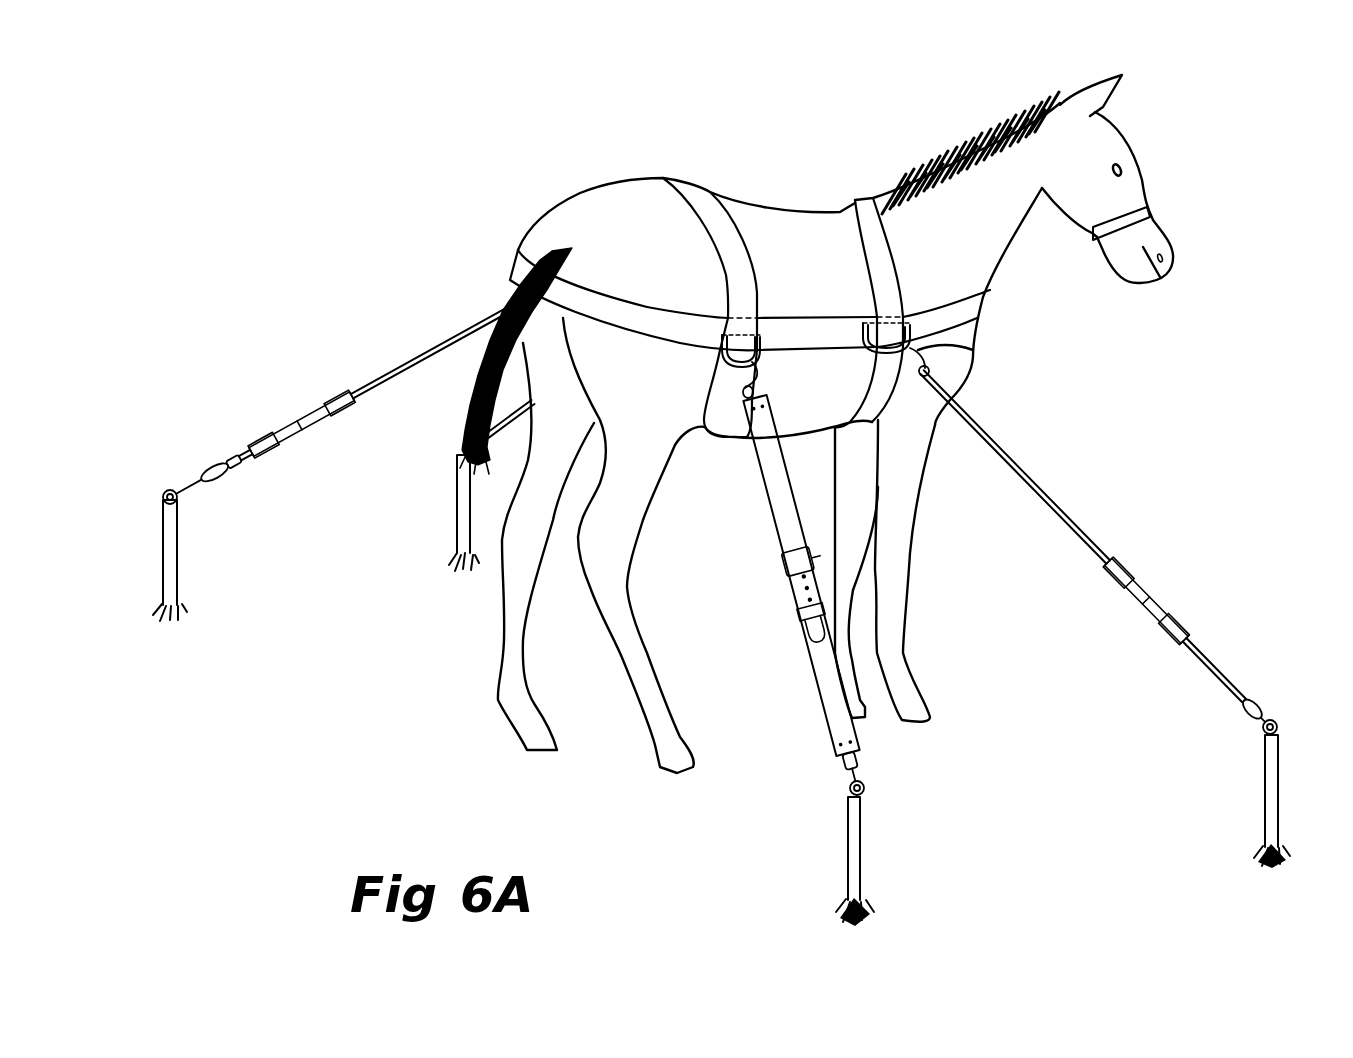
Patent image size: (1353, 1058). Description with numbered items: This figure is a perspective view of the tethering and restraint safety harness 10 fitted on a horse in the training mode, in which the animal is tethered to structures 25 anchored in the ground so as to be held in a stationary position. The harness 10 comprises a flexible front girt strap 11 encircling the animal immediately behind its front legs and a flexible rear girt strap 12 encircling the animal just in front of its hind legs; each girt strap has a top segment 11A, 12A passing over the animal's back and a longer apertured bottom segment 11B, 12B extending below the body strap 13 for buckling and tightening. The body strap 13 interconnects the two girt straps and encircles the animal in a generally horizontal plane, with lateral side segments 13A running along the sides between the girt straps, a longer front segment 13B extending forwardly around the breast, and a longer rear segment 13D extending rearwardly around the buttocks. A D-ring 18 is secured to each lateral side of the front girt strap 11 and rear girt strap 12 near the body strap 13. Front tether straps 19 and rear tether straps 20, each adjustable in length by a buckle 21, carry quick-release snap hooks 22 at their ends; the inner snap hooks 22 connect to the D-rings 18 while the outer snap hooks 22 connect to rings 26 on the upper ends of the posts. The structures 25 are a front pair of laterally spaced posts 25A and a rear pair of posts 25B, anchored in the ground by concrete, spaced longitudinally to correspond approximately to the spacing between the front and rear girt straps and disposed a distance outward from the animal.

The tethering and restraint safety harness 10 is at (1068, 386).
The front girt strap 11 is at (866, 317).
The top segment of front girt strap 11A is at (850, 198).
The longer bottom segment of front girt strap 11B is at (840, 443).
The rear girt strap 12 is at (704, 313).
The top segment of rear girt strap 12A is at (677, 182).
The longer bottom segment of rear girt strap 12B is at (722, 445).
The body strap 13 is at (786, 320).
The lateral side segment of body strap 13A is at (862, 347).
The longer front segment of body strap 13B is at (985, 303).
The longer rear segment of body strap 13D is at (600, 300).
The D-ring 18 is at (720, 362).
The front tether strap 19 is at (470, 460).
The rear tether strap 20 is at (395, 373).
The buckle 21 is at (325, 400).
The quick-release snap hook 22 is at (183, 477).
The structure anchored in the ground 25 is at (721, 690).
The front post 25A is at (455, 520).
The rear post 25B is at (180, 557).
The ring 26 is at (165, 490).